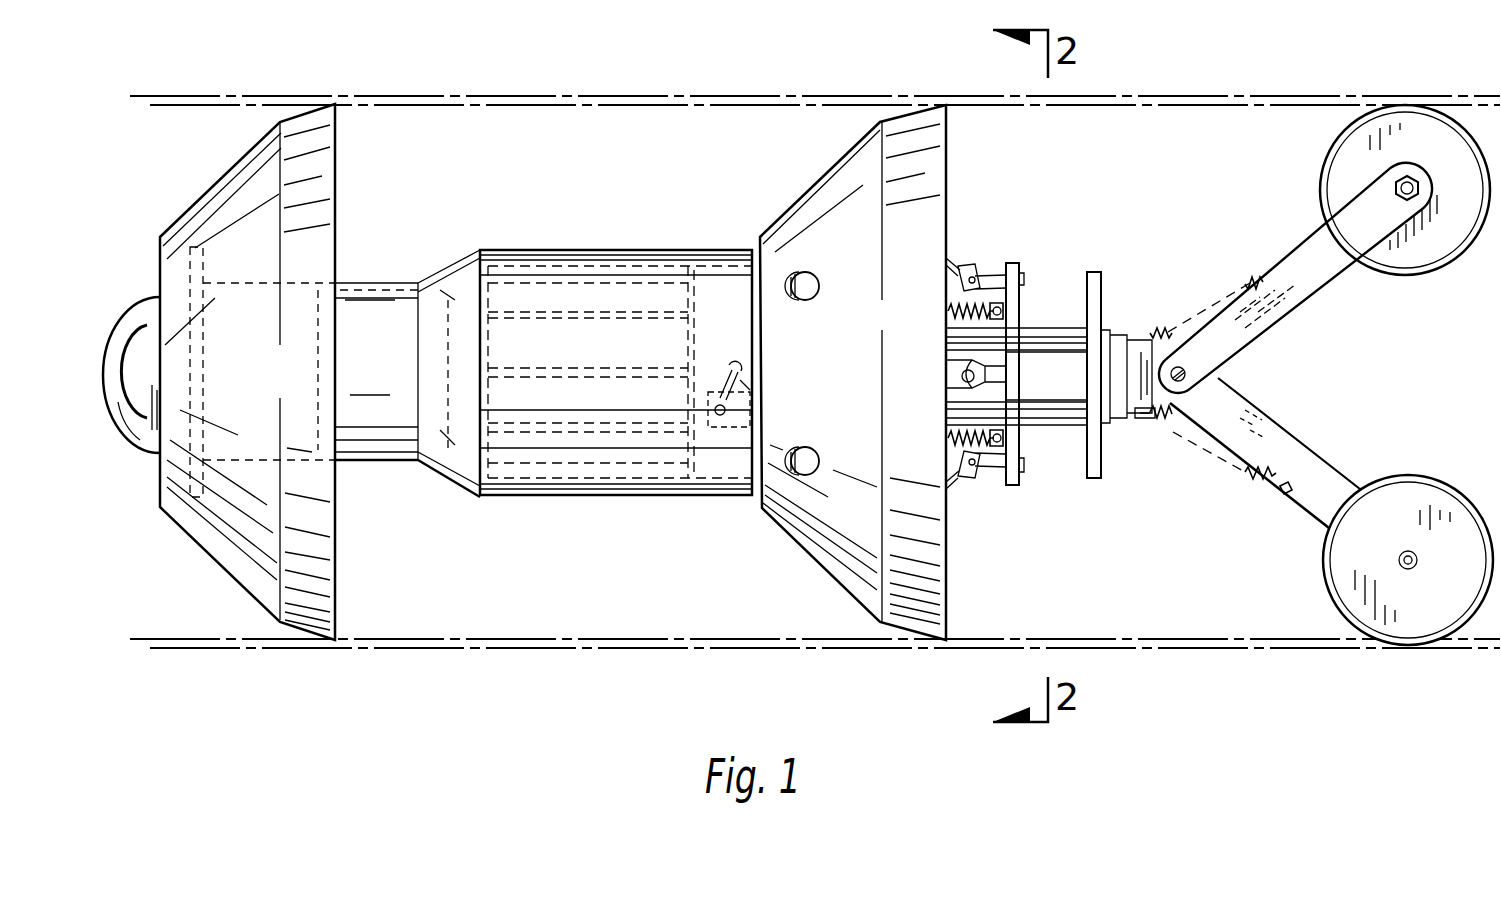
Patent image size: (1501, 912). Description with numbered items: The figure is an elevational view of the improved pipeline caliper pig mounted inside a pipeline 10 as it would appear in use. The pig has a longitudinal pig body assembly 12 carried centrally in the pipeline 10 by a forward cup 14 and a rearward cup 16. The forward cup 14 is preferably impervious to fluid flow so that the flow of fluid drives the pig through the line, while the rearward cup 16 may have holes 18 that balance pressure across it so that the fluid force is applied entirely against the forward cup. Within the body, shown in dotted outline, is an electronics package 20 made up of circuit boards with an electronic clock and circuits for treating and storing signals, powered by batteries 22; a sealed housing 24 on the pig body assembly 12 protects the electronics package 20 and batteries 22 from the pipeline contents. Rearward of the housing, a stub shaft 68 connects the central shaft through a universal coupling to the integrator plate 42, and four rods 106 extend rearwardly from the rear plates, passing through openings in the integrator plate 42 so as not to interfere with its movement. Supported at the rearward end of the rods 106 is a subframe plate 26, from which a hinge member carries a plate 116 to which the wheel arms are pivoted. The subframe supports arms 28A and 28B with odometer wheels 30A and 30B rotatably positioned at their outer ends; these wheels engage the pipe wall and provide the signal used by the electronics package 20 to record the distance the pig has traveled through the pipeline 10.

The pipeline 10 is at (562, 95).
The pig body assembly 12 is at (470, 525).
The forward cup 14 is at (236, 172).
The rearward cup 16 is at (853, 372).
The holes 18 is at (815, 297).
The electronics package 20 is at (616, 384).
The batteries 22 is at (372, 300).
The sealed housing 24 is at (559, 496).
The subframe plate 26 is at (1092, 272).
The arm 28A is at (1300, 260).
The arm 28B is at (1308, 456).
The odometer wheel 30A is at (1338, 177).
The odometer wheel 30B is at (1423, 490).
The integrator plate 42 is at (1010, 265).
The stub shaft 68 is at (992, 382).
The rods 106 is at (1060, 337).
The plate 116 is at (1141, 345).